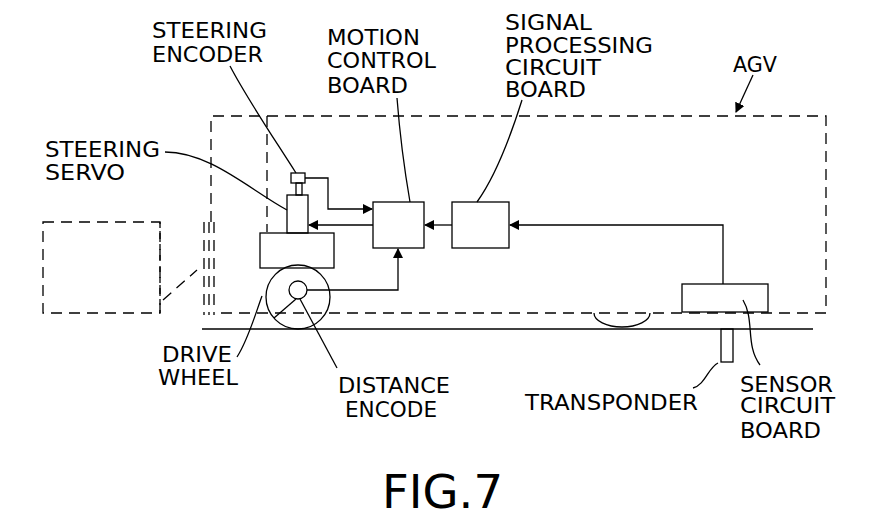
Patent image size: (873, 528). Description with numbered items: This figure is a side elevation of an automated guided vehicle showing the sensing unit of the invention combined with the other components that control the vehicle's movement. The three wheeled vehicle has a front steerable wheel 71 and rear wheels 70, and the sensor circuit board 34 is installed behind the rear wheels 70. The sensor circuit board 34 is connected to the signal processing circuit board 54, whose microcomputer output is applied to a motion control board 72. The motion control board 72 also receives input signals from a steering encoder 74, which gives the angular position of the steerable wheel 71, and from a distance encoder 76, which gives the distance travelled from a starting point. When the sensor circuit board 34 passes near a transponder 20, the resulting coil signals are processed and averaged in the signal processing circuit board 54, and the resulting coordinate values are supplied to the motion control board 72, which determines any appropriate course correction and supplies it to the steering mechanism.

The steering encoder 74 is at (298, 172).
The motion control board 72 is at (391, 202).
The signal processing circuit board 54 is at (503, 202).
The sensor circuit board 34 is at (742, 284).
The distance encoder 76 is at (271, 317).
The steerable wheel 71 is at (333, 298).
The rear wheels 70 is at (597, 330).
The transponder 20 is at (720, 344).